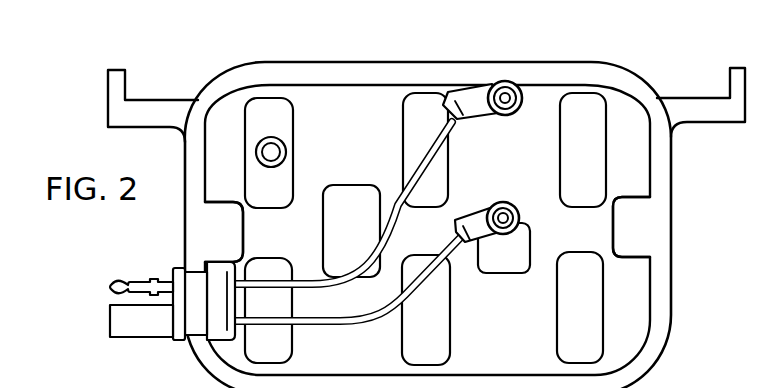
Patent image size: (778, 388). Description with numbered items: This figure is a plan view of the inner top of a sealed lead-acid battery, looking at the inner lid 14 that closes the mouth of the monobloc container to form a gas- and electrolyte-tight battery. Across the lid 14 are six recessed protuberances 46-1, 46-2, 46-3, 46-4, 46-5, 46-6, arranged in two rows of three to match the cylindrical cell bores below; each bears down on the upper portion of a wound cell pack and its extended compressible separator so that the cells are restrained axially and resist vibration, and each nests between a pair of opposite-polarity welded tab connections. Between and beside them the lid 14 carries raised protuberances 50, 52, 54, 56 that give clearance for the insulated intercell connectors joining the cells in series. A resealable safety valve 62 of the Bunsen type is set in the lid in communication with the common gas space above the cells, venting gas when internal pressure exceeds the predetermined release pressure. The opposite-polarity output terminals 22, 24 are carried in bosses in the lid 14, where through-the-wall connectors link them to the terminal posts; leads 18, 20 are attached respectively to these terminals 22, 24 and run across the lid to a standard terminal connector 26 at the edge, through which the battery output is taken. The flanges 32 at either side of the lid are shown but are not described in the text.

The inner lid 14 is at (562, 58).
The mounting flange 32 is at (133, 108).
The raised protuberance 50 is at (217, 231).
The raised protuberance 56 is at (638, 228).
The recessed protuberance 46-1 is at (413, 137).
The recessed protuberance 46-2 is at (283, 113).
The recessed protuberance 46-3 is at (285, 337).
The recessed protuberance 46-4 is at (433, 315).
The recessed protuberance 46-5 is at (600, 312).
The recessed protuberance 46-6 is at (565, 140).
The raised protuberance 52 is at (368, 228).
The raised protuberance 54 is at (490, 263).
The resealable safety valve 62 is at (285, 147).
The lead 18 is at (318, 278).
The lead 20 is at (392, 302).
The terminal 22 is at (483, 110).
The terminal 24 is at (460, 221).
The terminal connector 26 is at (98, 311).